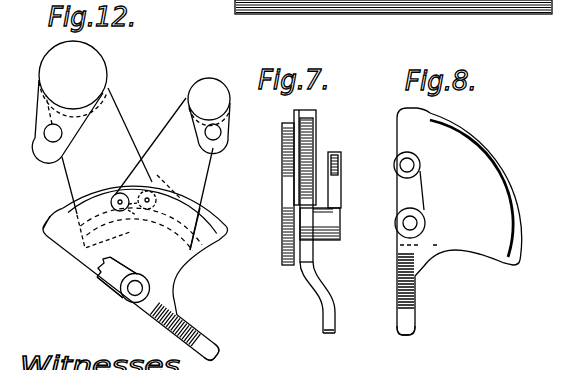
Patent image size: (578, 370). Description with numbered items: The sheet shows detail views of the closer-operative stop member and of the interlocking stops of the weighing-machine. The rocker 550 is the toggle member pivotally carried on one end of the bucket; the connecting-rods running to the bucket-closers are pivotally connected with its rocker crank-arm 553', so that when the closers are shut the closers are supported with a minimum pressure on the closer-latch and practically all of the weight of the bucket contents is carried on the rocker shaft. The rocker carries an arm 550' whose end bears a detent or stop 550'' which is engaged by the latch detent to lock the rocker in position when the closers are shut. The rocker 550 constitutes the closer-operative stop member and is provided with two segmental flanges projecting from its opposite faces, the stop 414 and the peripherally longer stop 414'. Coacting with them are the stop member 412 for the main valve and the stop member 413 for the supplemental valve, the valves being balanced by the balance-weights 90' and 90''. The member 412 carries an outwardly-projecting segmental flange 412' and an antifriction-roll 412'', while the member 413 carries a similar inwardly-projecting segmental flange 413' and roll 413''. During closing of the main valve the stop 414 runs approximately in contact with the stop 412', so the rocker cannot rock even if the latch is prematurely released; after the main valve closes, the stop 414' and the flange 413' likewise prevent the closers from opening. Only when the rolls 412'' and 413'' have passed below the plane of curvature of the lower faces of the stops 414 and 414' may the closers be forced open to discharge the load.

In FIG. 12, the balance-weight 90' is at (89, 102).
In FIG. 12, the balance-weight 90'' is at (206, 105).
In FIG. 12, the stop member for the main valve 412 is at (77, 202).
In FIG. 12, the outwardly-projecting segmental flange 412' is at (92, 236).
In FIG. 12, the antifriction-roll 412'' is at (153, 148).
In FIG. 12, the stop member for the supplemental valve 413 is at (219, 199).
In FIG. 12, the inwardly-projecting segmental flange 413' is at (221, 223).
In FIG. 12, the antifriction-roll 413'' is at (120, 136).
In FIG. 12, the segmental flange stop 414 is at (118, 216).
In FIG. 7, the segmental flange stop 414 is at (267, 183).
In FIG. 8, the segmental flange stop 414 is at (479, 186).
In FIG. 12, the segmental flange stop 414' is at (27, 223).
In FIG. 7, the segmental flange stop 414' is at (334, 149).
In FIG. 8, the segmental flange stop 414' is at (471, 177).
In FIG. 12, the rocker 550 is at (161, 250).
In FIG. 7, the rocker 550 is at (329, 190).
In FIG. 8, the rocker 550 is at (478, 221).
In FIG. 12, the rocker arm 550' is at (155, 325).
In FIG. 7, the rocker arm 550' is at (339, 297).
In FIG. 8, the rocker arm 550' is at (380, 281).
In FIG. 12, the detent or stop 550'' is at (240, 356).
In FIG. 7, the detent or stop 550'' is at (354, 334).
In FIG. 8, the detent or stop 550'' is at (381, 336).
In FIG. 12, the rocker crank-arm 553' is at (95, 286).
In FIG. 7, the rocker crank-arm 553' is at (355, 180).
In FIG. 8, the rocker crank-arm 553' is at (386, 195).